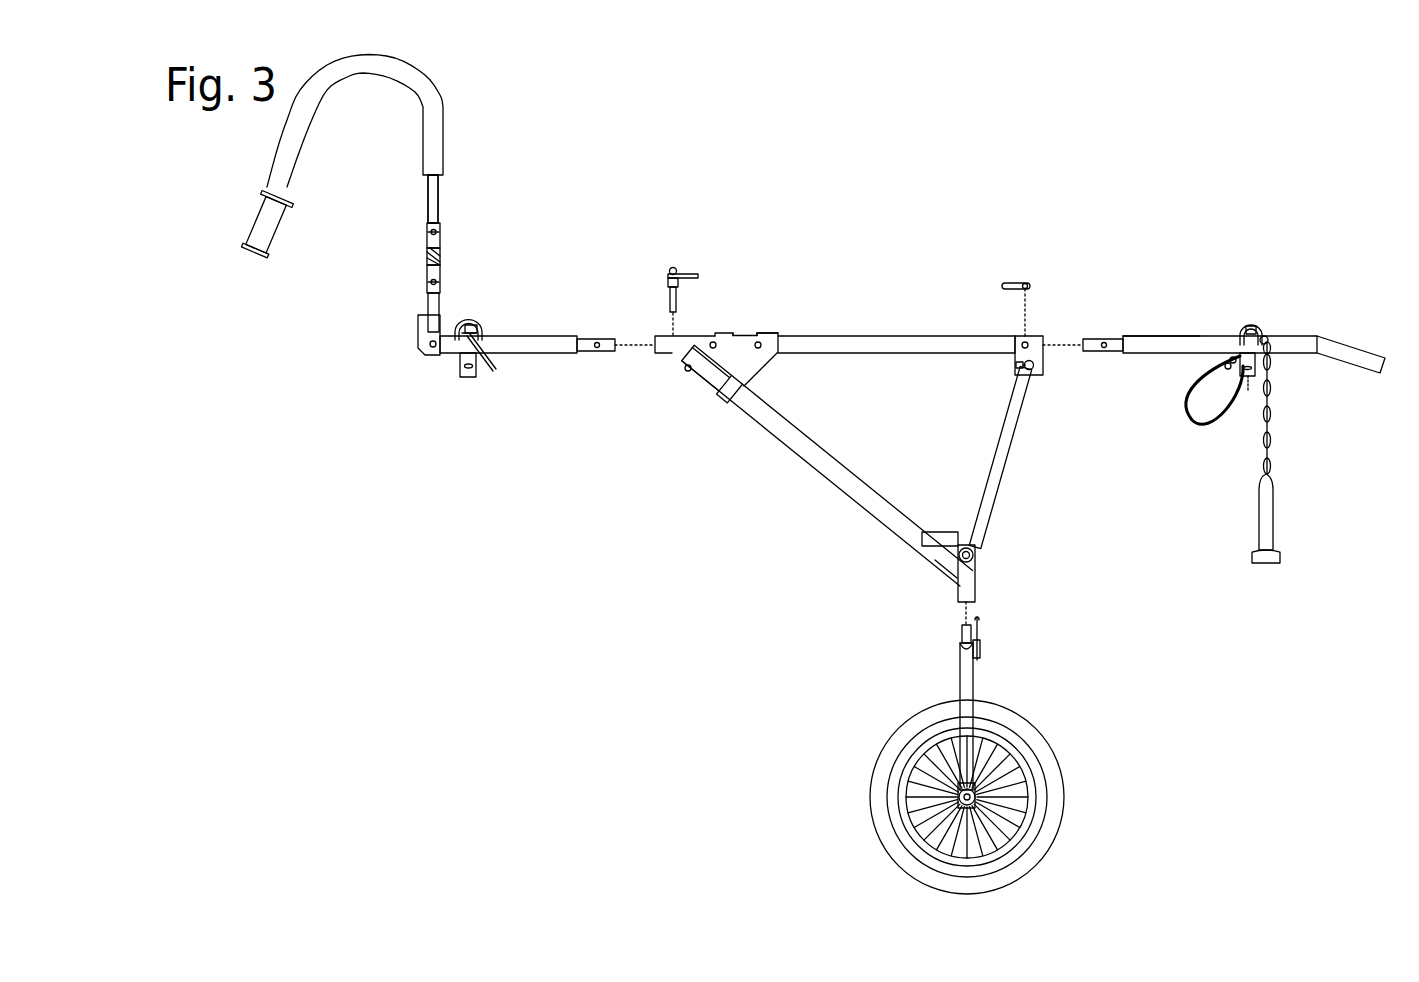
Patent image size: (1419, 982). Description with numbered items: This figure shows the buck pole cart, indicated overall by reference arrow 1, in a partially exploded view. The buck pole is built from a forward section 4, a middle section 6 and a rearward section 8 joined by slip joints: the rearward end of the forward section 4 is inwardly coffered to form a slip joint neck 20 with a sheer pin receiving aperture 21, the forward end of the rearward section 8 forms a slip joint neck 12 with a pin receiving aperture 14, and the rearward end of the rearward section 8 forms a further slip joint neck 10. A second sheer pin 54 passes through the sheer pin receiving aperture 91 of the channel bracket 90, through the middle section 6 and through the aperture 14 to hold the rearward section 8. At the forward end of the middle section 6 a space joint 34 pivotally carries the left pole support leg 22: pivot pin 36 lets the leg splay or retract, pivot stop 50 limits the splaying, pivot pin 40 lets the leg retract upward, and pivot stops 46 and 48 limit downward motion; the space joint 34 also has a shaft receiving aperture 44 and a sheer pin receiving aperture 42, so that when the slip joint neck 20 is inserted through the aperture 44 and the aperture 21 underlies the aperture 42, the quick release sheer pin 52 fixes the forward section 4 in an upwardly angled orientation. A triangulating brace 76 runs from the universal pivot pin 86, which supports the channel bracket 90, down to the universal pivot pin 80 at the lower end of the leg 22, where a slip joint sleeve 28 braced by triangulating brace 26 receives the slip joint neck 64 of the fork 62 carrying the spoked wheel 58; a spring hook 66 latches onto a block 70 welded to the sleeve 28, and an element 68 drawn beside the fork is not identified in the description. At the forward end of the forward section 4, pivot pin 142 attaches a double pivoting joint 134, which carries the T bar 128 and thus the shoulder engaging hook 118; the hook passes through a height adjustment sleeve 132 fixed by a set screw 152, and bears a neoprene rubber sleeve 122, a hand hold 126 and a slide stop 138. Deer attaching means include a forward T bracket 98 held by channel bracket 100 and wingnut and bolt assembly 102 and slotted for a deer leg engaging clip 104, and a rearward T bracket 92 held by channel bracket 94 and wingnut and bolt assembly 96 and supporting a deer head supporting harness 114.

The wheeled carrier assembly 1 is at (884, 210).
The forward section 4 is at (527, 342).
The middle section 6 is at (925, 340).
The rearward section 8 is at (1160, 350).
The slip joint neck 10 is at (1352, 365).
The slip joint neck 12 is at (1125, 340).
The pin receiving aperture 14 is at (1106, 349).
The slip joint neck 20 is at (612, 350).
The sheer pin receiving aperture 21 is at (598, 343).
The left pole support leg 22 is at (820, 458).
The left triangulating brace 26 is at (945, 532).
The slip joint sleeve 28 is at (960, 580).
The space joint 34 is at (775, 322).
The pivot pin 36 is at (688, 371).
The pivot pin 40 is at (712, 339).
The sheer pin receiving aperture 42 is at (760, 348).
The shaft receiving aperture 44 is at (757, 333).
The pivot stop 46 is at (733, 333).
The pivot stop 48 is at (778, 335).
The pivot stop 50 is at (718, 400).
The quick release sheer pin 52 is at (673, 268).
The second sheer pin 54 is at (1010, 285).
The left spoked wheel 58 is at (880, 798).
The left wheel receiving fork 62 is at (962, 690).
The slip joint neck 64 is at (962, 630).
The left spring hook 66 is at (980, 632).
The direction of rotation arrow 68 is at (982, 725).
The left block 70 is at (978, 582).
The left triangulating brace 76 is at (1000, 450).
The universal pivot pin 80 is at (978, 556).
The universal pivot pin 86 is at (1037, 370).
The channel bracket 90 is at (1045, 350).
The sheer pin receiving aperture 91 is at (1030, 342).
The rearward T bracket 92 is at (1249, 325).
The channel bracket 94 is at (1262, 336).
The wingnut and bolt assembly 96 is at (1247, 380).
The forward T bracket 98 is at (468, 326).
The channel bracket 100 is at (460, 360).
The wingnut and bolt assembly 102 is at (470, 370).
The deer leg engaging clip 104 is at (495, 372).
The deer head supporting harness 114 is at (1270, 470).
The left shoulder engaging hook 118 is at (427, 185).
The neoprene rubber sleeve 122 is at (418, 78).
The left hand hold 126 is at (263, 230).
The T bar 128 is at (428, 238).
The left height adjustment sleeve 132 is at (428, 222).
The double pivoting joint 134 is at (422, 340).
The left slide stop 138 is at (425, 312).
The pivot pin 142 is at (425, 346).
The set screw 152 is at (428, 258).